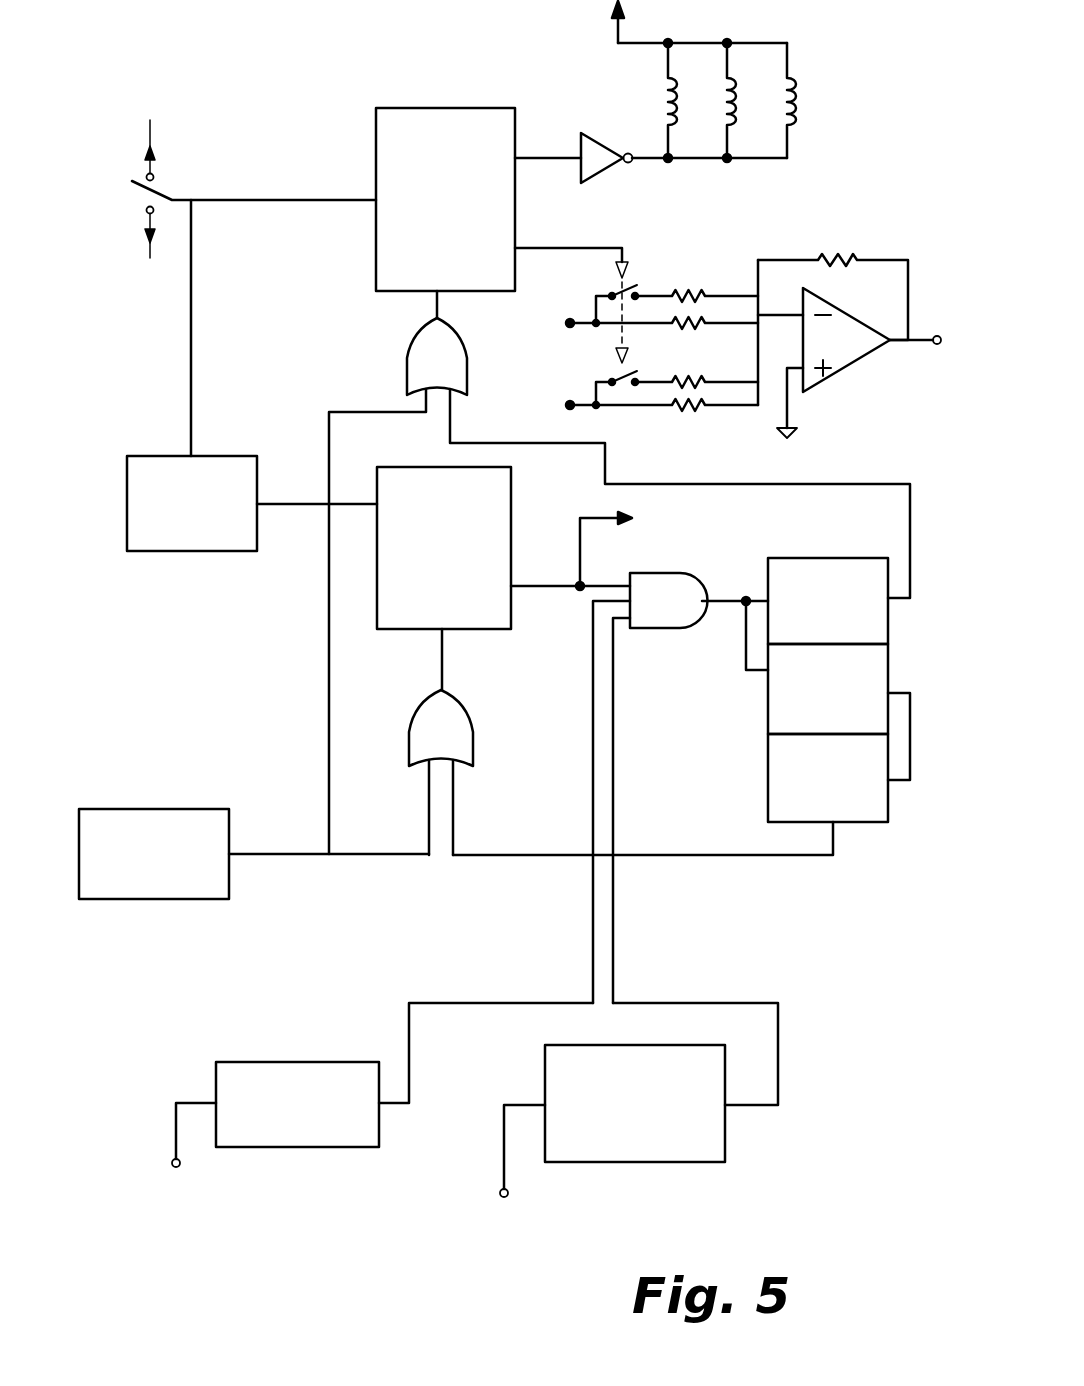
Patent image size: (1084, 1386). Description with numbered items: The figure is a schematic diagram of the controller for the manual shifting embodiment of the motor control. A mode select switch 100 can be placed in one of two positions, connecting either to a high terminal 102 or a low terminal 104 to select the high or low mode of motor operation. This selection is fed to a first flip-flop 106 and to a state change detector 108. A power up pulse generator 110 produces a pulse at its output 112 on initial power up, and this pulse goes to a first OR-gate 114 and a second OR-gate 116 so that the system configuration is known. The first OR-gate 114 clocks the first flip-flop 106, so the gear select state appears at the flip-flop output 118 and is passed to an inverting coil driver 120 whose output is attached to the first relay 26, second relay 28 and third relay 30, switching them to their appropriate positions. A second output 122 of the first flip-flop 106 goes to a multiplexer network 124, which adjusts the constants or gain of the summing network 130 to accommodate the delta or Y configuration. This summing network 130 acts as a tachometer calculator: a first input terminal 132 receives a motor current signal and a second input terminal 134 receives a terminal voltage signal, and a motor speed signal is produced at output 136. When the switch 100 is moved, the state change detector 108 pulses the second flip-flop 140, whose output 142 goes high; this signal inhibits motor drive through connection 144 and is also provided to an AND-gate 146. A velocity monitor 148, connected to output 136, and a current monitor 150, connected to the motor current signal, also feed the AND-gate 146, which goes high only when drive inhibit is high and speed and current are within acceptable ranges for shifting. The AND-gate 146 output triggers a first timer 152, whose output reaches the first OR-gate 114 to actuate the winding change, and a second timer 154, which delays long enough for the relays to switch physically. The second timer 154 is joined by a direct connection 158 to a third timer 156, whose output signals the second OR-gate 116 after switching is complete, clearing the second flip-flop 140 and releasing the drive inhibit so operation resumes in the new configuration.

The first relay 26 is at (676, 112).
The second relay 28 is at (735, 112).
The third relay 30 is at (796, 99).
The switch 100 is at (172, 188).
The high terminal 102 is at (154, 175).
The low terminal 104 is at (147, 211).
The first flip-flop 106 is at (424, 108).
The state change detector 108 is at (160, 551).
The power up pulse generator 110 is at (145, 809).
The output 112 is at (262, 857).
The first OR-gate 114 is at (407, 372).
The second OR-gate 116 is at (469, 714).
The flip-flop output 118 is at (526, 156).
The inverting coil driver 120 is at (602, 171).
The second output 122 is at (522, 246).
The multiplexer network 124 is at (636, 272).
The summing network 130 is at (880, 223).
The first input terminal 132 is at (570, 410).
The second input terminal 134 is at (570, 328).
The output 136 is at (937, 345).
The second flip-flop 140 is at (400, 467).
The output 142 is at (520, 589).
The connection 144 is at (594, 514).
The AND-gate 146 is at (640, 630).
The velocity monitor 148 is at (282, 1147).
The current monitor 150 is at (690, 1162).
The first timer 152 is at (884, 616).
The second timer 154 is at (768, 717).
The third timer 156 is at (880, 810).
The direct connection 158 is at (912, 706).